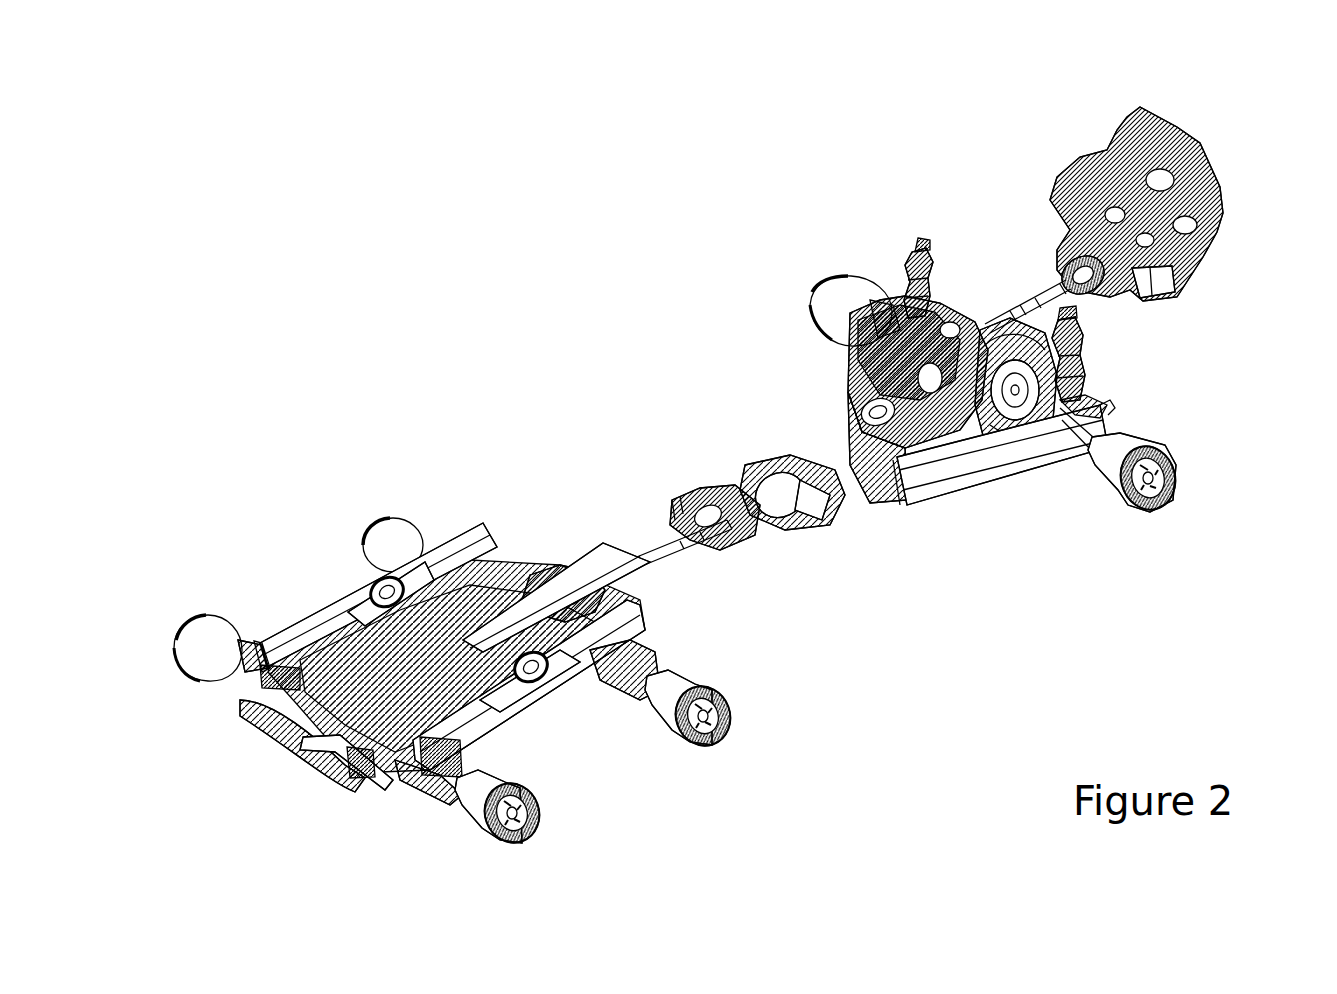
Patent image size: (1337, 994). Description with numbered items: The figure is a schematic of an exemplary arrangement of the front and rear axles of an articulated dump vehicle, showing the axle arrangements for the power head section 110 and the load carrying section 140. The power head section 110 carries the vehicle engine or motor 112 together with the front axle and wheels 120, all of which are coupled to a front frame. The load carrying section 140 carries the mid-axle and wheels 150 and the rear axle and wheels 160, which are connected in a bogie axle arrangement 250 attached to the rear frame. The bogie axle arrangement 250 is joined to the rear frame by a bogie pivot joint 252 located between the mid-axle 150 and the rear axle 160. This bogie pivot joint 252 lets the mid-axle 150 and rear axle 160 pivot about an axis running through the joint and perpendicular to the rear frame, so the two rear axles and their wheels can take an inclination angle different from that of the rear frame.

The power head section 110 is at (868, 180).
The vehicle engine or motor 112 is at (1217, 106).
The front axle and wheels 120 is at (1215, 495).
The load carrying section 140 is at (581, 315).
The mid-axle and wheels 150 is at (750, 712).
The rear axle and wheels 160 is at (558, 840).
The bogie axle arrangement 250 is at (459, 500).
The bogie pivot joint 252 is at (380, 592).